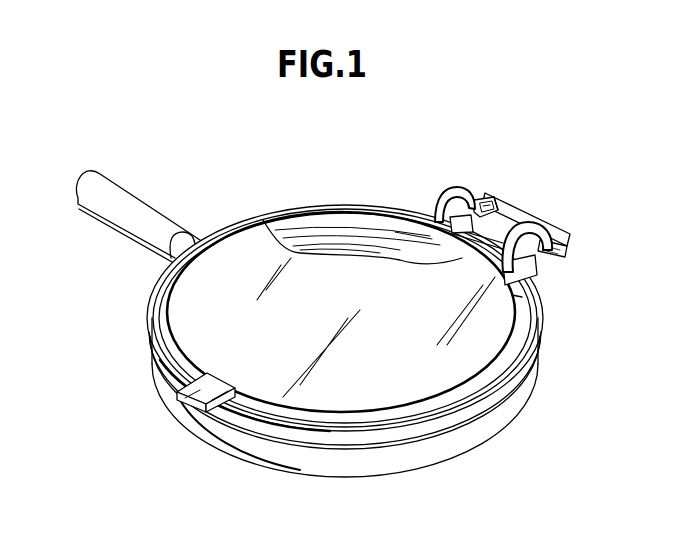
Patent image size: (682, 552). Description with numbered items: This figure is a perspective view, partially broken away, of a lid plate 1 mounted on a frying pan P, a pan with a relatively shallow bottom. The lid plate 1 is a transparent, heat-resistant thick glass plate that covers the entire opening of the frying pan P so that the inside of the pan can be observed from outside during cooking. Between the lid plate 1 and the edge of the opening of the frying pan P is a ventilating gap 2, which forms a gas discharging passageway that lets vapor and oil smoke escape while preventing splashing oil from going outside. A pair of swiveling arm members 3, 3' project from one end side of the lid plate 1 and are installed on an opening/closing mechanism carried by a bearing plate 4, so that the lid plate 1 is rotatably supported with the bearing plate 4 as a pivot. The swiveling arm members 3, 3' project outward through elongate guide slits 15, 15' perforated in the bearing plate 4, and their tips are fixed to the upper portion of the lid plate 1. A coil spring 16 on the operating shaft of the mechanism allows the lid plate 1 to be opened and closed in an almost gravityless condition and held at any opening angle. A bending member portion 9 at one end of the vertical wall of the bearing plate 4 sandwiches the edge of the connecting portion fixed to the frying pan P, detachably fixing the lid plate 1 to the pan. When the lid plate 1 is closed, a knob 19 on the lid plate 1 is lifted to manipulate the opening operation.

The lid plate 1 is at (343, 400).
The ventilating gap 2 is at (158, 333).
The frying pan P is at (470, 447).
The knob 19 is at (175, 400).
The swiveling arm member 3 is at (557, 223).
The swiveling arm member 3' is at (443, 170).
The bearing plate 4 is at (538, 203).
The bending member portion 9 is at (536, 266).
The elongate guide slit 15 is at (590, 231).
The elongate guide slit 15' is at (500, 150).
The coil spring 16 is at (493, 200).